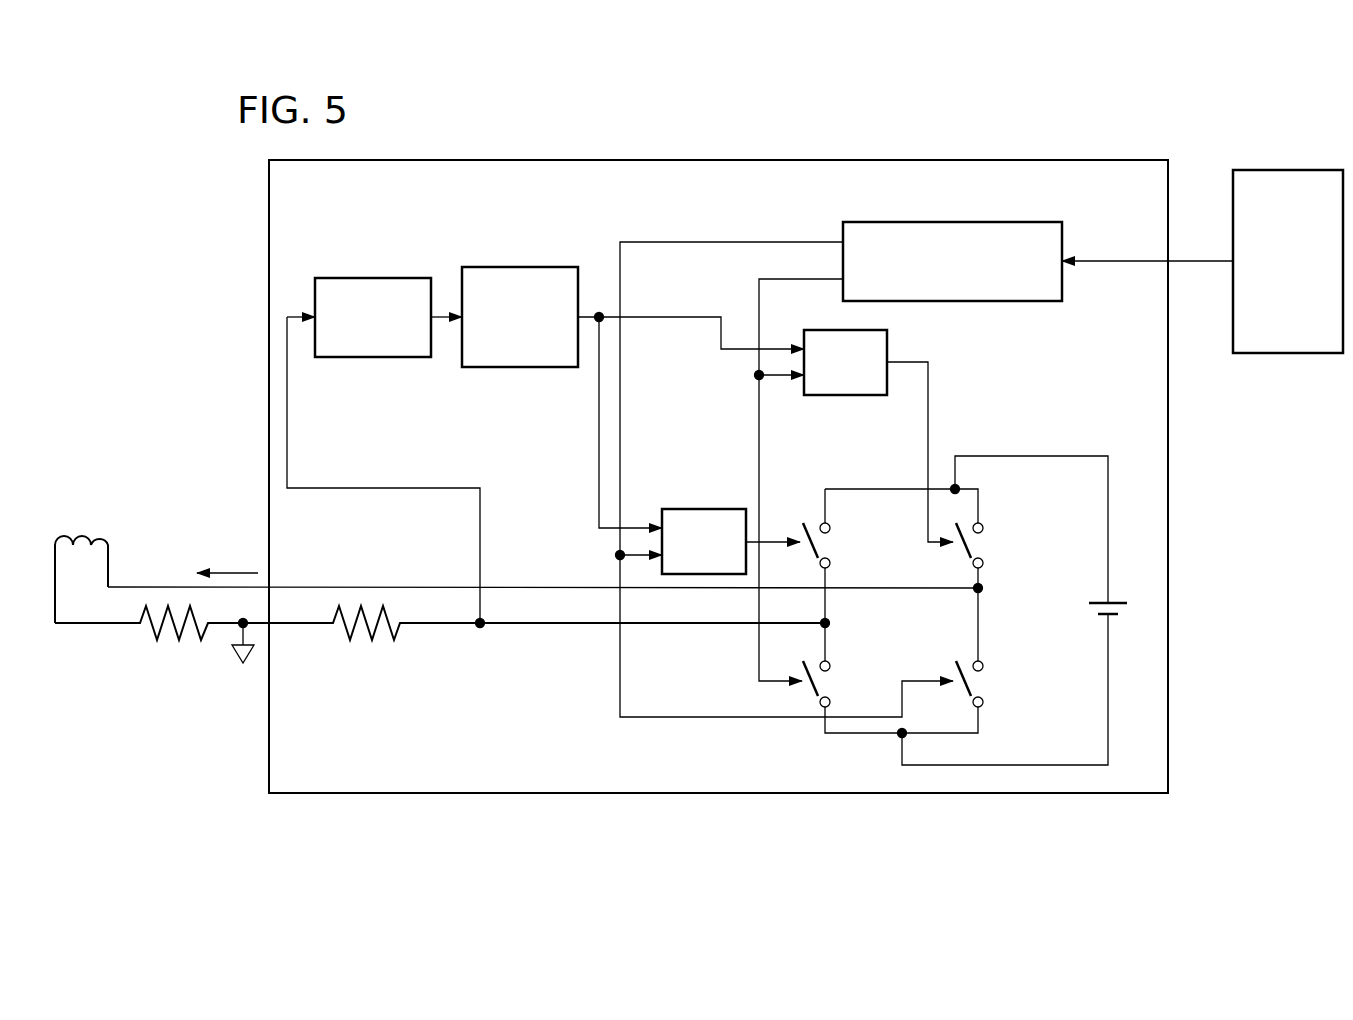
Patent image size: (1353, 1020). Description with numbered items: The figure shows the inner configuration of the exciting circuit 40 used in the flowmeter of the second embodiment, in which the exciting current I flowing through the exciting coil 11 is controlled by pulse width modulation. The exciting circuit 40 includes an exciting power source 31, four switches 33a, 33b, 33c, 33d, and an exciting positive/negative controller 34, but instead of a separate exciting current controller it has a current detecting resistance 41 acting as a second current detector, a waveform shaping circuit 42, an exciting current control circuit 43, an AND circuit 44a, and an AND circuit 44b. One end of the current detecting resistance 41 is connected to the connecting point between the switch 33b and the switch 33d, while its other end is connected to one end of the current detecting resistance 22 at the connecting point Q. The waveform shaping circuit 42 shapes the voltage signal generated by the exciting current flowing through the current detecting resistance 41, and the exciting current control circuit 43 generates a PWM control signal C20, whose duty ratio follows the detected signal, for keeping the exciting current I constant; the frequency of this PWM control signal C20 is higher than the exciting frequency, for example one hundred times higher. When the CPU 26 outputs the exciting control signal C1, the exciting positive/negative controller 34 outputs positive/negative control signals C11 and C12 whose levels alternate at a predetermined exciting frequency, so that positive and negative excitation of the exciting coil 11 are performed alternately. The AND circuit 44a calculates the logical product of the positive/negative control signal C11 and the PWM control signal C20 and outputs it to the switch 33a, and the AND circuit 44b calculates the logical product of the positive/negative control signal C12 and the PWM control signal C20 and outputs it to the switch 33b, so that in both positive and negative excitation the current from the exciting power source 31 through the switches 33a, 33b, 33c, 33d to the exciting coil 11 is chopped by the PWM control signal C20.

The exciting coil 11 is at (92, 542).
The current detecting resistance 22 is at (176, 634).
The CPU 26 is at (1290, 170).
The exciting power source 31 is at (1112, 602).
The switch 33a is at (985, 545).
The switch 33b is at (830, 545).
The switch 33c is at (985, 685).
The switch 33d is at (828, 685).
The exciting positive/negative controller 34 is at (918, 222).
The exciting circuit 40 is at (1108, 160).
The current detecting resistance 41 is at (366, 634).
The waveform shaping circuit 42 is at (390, 278).
The exciting current control circuit 43 is at (536, 267).
The AND circuit 44a is at (888, 343).
The AND circuit 44b is at (700, 509).
The exciting control signal C1 is at (1200, 258).
The positive/negative control signal C11 is at (828, 279).
The positive/negative control signal C12 is at (765, 242).
The PWM control signal C20 is at (705, 317).
The exciting current I is at (236, 572).
The connecting point Q is at (240, 627).